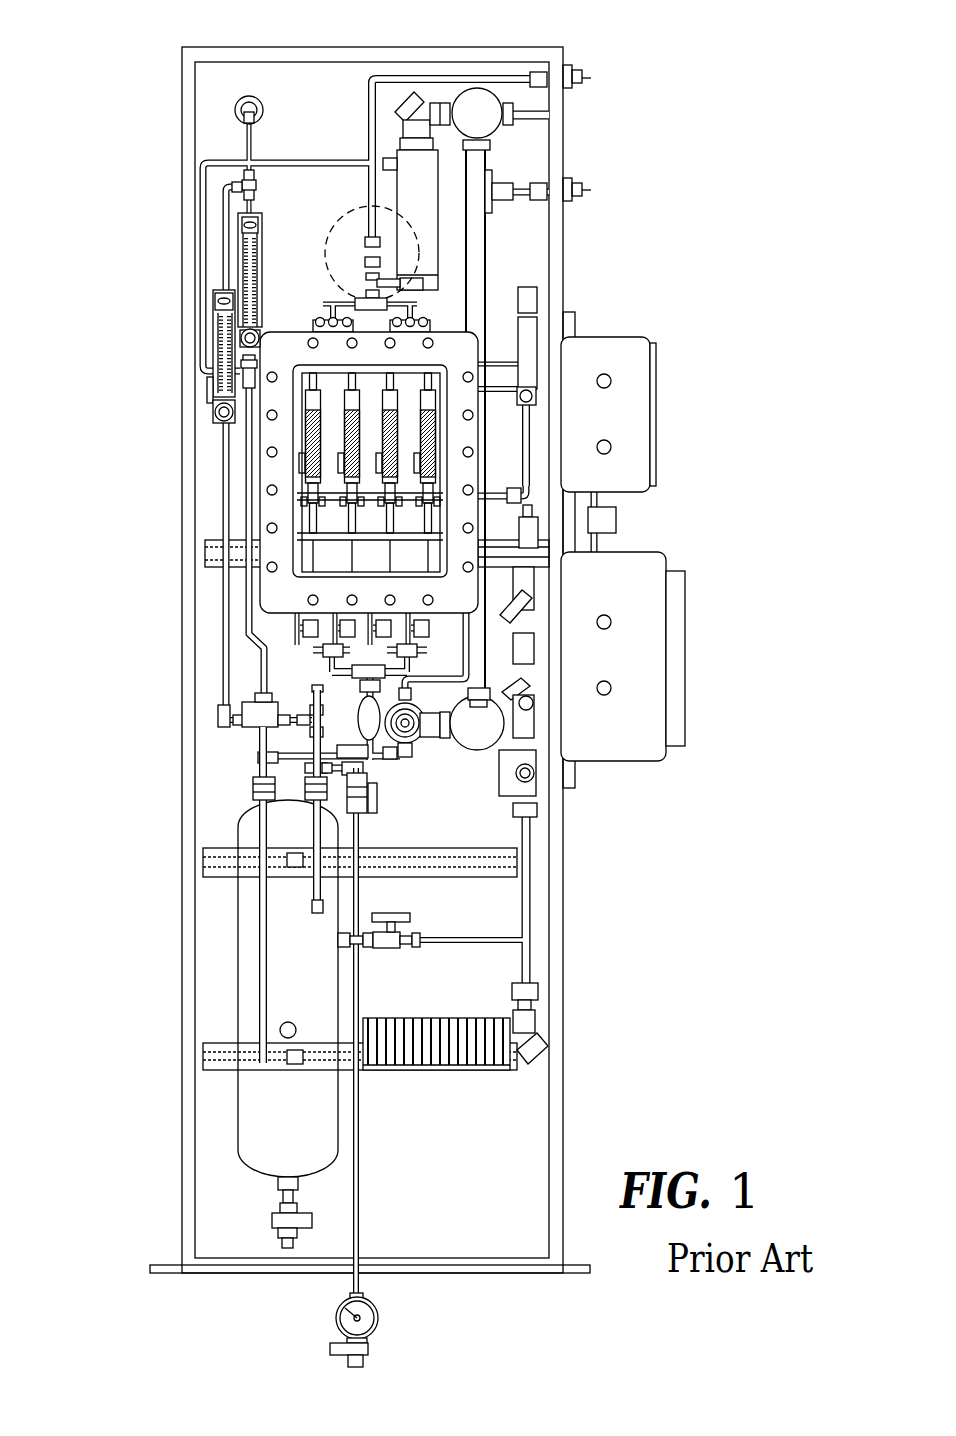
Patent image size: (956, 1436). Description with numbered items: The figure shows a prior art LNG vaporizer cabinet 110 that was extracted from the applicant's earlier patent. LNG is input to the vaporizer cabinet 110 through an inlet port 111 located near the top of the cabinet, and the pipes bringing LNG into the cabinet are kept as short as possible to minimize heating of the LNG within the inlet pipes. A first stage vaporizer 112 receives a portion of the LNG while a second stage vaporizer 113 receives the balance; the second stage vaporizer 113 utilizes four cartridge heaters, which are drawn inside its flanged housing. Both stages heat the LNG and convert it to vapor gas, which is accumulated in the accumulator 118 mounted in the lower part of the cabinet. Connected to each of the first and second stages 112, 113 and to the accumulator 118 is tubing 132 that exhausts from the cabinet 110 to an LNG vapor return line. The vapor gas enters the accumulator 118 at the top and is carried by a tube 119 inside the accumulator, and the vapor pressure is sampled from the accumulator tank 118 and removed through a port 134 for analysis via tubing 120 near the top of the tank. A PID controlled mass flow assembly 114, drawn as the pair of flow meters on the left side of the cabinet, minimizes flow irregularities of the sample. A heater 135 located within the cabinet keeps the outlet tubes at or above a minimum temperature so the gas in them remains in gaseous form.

The vaporizer cabinet 110 is at (182, 83).
The inlet port 111 is at (350, 213).
The first stage vaporizer 112 is at (422, 225).
The second stage vaporizer 113 is at (275, 438).
The PID controlled mass flow assembly 114 is at (177, 318).
The accumulator 118 is at (252, 832).
The tube 119 is at (258, 905).
The tubing 120 is at (308, 907).
The tubing 132 is at (238, 615).
The port 134 is at (362, 949).
The heater 135 is at (425, 1070).